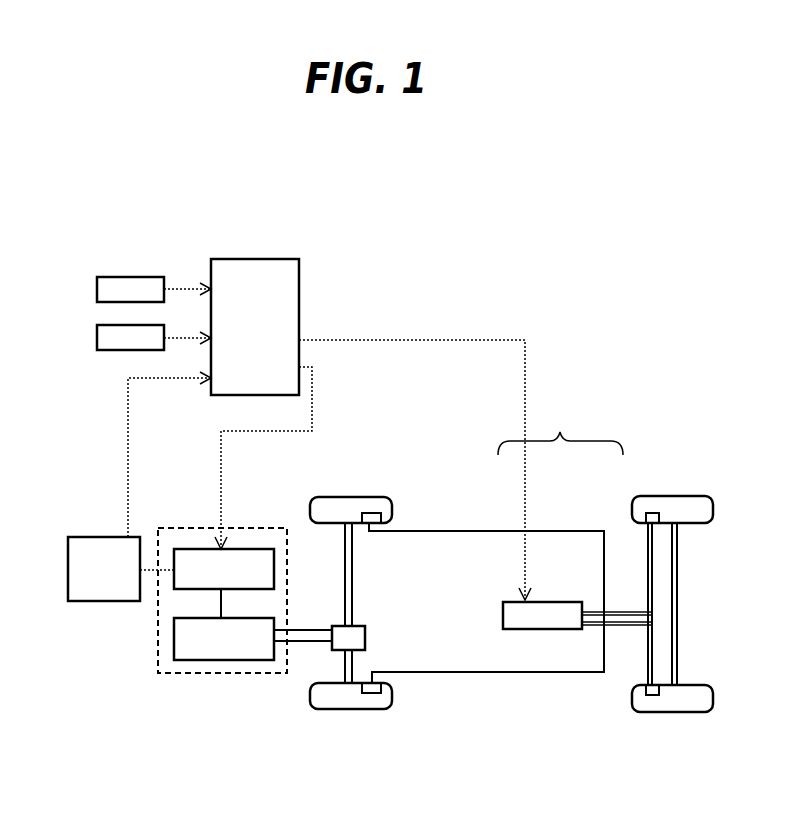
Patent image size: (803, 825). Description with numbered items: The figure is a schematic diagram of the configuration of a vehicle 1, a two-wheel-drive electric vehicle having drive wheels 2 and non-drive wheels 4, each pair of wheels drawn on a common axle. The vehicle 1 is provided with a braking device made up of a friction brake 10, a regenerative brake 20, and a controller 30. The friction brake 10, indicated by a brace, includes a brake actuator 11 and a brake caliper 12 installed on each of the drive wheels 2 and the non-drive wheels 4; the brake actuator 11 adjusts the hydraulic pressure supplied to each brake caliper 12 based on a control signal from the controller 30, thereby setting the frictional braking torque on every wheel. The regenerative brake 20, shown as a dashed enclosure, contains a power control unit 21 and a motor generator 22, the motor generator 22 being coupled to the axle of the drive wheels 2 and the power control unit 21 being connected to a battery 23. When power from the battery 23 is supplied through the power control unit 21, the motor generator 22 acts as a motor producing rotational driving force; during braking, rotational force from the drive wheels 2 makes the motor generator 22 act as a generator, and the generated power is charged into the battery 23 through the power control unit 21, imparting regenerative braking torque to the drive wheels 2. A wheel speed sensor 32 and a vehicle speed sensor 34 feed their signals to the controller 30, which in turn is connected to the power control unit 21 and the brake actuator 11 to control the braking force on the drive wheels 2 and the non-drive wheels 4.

The vehicle 1 is at (95, 210).
The drive wheels 2 is at (335, 507).
The non-drive wheels 4 is at (682, 508).
The friction brake 10 is at (510, 546).
The brake actuator 11 is at (554, 617).
The brake caliper 12 is at (375, 515).
The regenerative brake 20 is at (185, 528).
The power control unit 21 is at (232, 557).
The motor generator 22 is at (263, 628).
The battery 23 is at (93, 585).
The controller 30 is at (287, 293).
The wheel speed sensor 32 is at (107, 290).
The vehicle speed sensor 34 is at (105, 337).